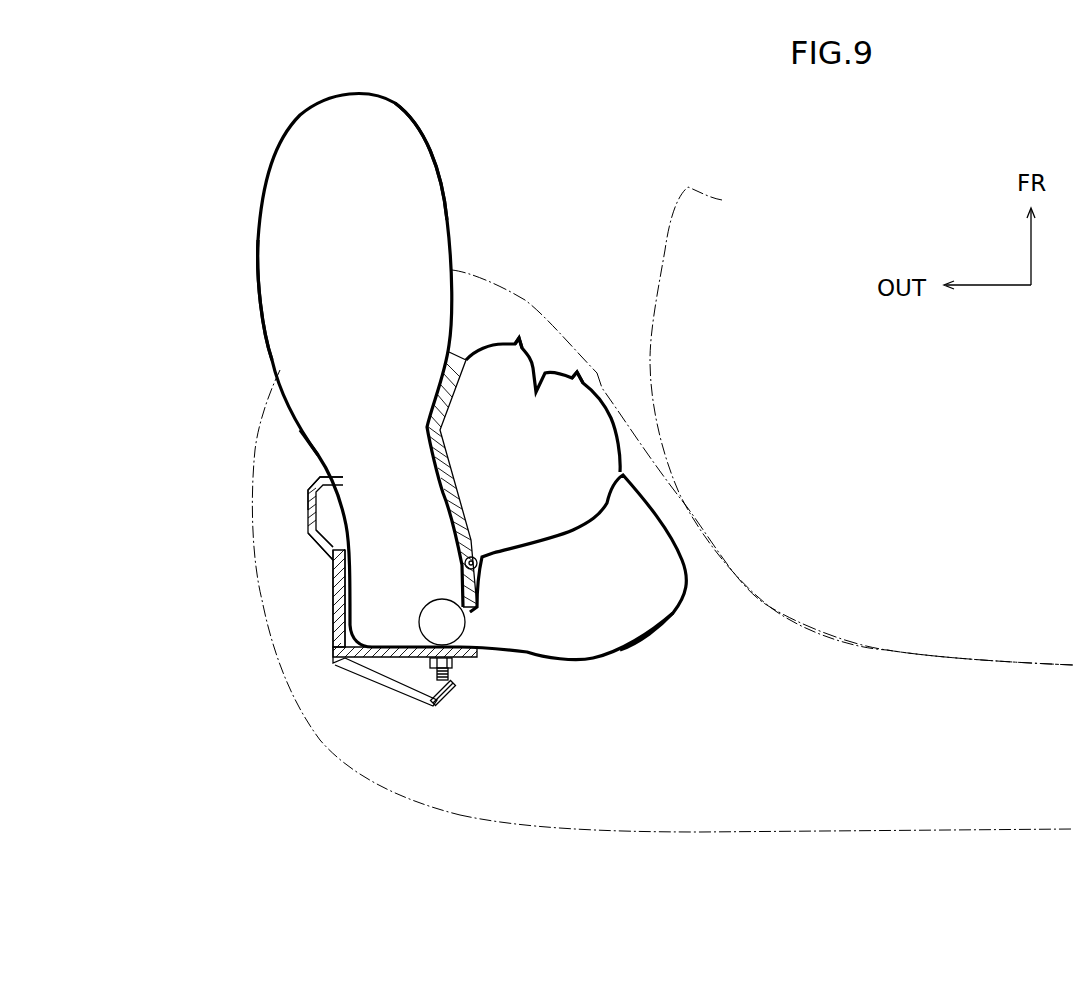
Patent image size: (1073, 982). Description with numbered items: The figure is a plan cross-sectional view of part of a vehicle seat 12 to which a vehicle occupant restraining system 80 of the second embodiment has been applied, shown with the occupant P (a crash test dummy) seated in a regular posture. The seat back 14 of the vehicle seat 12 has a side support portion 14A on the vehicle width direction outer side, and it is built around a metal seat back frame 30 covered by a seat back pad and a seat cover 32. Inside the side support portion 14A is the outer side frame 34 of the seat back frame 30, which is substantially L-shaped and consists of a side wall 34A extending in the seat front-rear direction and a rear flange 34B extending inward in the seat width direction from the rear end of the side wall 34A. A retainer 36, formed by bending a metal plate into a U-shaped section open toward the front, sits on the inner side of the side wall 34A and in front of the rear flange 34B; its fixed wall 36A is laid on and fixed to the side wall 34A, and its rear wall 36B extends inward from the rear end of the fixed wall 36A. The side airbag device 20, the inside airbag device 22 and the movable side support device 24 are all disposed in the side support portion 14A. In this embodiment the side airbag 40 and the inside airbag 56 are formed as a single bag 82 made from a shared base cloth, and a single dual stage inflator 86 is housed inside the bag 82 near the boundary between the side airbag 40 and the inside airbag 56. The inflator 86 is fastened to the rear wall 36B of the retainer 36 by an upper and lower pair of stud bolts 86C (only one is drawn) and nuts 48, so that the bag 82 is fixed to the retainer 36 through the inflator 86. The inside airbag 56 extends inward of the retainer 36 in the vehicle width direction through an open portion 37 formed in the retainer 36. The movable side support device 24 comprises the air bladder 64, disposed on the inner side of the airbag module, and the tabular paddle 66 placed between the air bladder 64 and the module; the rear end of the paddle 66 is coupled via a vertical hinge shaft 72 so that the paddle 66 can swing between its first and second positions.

The vehicle occupant restraining system 80 is at (500, 167).
The side airbag 40 is at (263, 211).
The side support portion 14A is at (516, 267).
The occupant P is at (670, 208).
The side airbag device 20 is at (226, 288).
The movable side support device 24 is at (550, 348).
The air bladder 64 is at (590, 395).
The seat cover 32 is at (268, 398).
The bag 82 is at (316, 438).
The paddle 66 is at (452, 470).
The side wall 34A is at (308, 520).
The hinge shaft 72 is at (464, 563).
The outer side frame 34 is at (312, 543).
The seat back frame 30 is at (320, 545).
The inflator 86 is at (427, 606).
The open portion 37 is at (476, 616).
The fixed wall 36A is at (333, 593).
The seat back 14 is at (1005, 637).
The vehicle seat 12 is at (766, 823).
The inside airbag 56 is at (670, 623).
The nuts 48 is at (459, 663).
The inside airbag device 22 is at (647, 653).
The rear flange 34B is at (372, 680).
The rear wall 36B is at (412, 660).
The stud bolts 86C is at (455, 683).
The retainer 36 is at (400, 662).